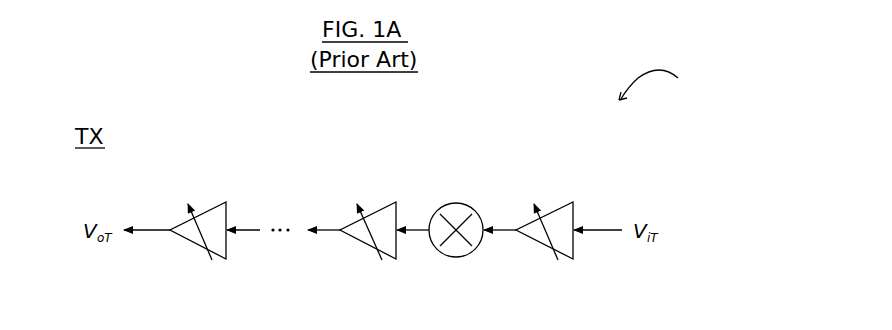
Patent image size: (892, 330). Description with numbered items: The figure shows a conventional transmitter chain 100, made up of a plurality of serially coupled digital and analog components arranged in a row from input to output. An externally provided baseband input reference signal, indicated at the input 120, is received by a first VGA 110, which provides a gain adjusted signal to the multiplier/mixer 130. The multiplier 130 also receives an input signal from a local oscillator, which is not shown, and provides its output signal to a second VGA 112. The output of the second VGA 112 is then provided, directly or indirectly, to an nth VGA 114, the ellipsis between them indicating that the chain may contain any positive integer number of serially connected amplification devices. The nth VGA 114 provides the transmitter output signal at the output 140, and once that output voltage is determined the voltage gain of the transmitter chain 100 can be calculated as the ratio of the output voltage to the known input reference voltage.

The transmitter chain 100 is at (674, 84).
The first VGA 110 is at (558, 203).
The second VGA 112 is at (382, 203).
The nth VGA 114 is at (212, 203).
The transmitter input signal 120 is at (603, 225).
The multiplier/mixer 130 is at (453, 199).
The output 140 is at (148, 228).